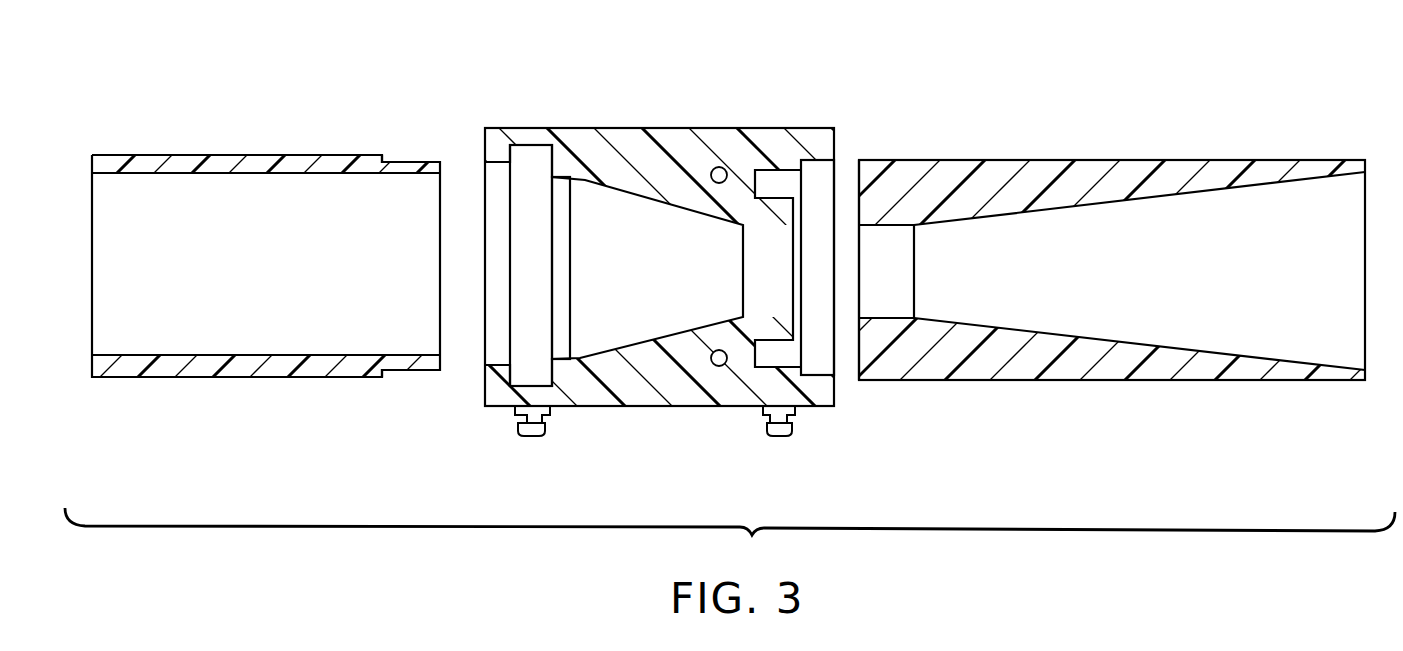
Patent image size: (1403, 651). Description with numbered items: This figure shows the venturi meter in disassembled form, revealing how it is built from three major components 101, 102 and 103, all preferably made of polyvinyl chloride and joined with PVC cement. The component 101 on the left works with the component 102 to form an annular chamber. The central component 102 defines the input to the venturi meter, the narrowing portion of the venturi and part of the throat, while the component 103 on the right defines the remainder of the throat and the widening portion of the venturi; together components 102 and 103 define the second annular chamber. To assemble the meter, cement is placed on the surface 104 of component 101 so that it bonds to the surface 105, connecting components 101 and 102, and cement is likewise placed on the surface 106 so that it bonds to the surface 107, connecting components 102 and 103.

The component 101 is at (188, 153).
The component 102 is at (672, 128).
The component 103 is at (1073, 159).
The surface 104 is at (394, 160).
The surface 105 is at (496, 164).
The surface 106 is at (874, 159).
The surface 107 is at (834, 170).